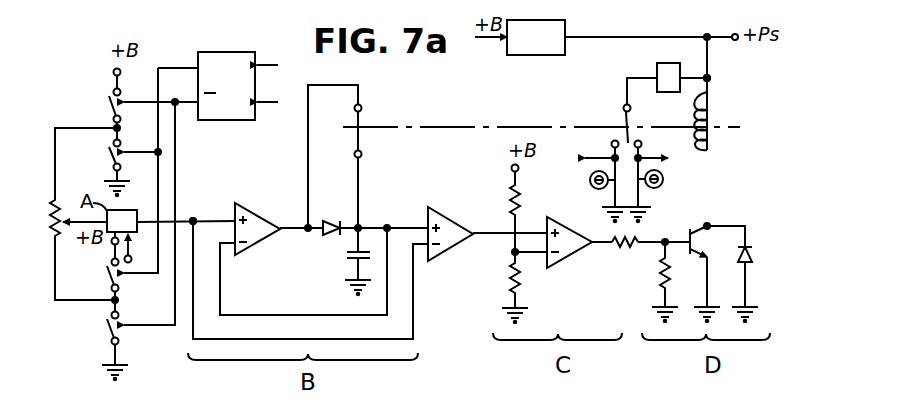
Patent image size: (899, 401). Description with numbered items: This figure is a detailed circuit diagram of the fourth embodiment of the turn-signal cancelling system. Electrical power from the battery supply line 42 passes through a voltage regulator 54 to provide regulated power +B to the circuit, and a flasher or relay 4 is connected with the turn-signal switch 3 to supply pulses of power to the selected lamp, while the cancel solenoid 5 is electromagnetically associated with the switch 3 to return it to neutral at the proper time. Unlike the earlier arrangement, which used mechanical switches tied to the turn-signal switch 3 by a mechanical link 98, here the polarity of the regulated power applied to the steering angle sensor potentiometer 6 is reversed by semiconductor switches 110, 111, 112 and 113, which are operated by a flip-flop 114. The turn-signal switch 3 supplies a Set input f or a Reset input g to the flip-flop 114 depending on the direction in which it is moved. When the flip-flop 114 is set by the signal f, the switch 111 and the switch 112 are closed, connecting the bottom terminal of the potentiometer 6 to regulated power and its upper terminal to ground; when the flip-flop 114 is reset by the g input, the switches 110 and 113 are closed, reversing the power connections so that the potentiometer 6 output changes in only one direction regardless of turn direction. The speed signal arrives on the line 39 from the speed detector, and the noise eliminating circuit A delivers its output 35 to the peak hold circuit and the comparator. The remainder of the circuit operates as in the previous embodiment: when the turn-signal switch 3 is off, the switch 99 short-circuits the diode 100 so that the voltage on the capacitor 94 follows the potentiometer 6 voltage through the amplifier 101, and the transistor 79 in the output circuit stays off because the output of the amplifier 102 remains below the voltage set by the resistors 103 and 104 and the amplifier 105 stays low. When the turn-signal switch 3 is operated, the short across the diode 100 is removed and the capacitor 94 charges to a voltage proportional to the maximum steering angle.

The turn-signal switch 3 is at (622, 119).
The flasher or relay 4 is at (658, 64).
The cancel solenoid 5 is at (718, 142).
The steering angle sensor potentiometer 6 is at (42, 229).
The output of the noise eliminating circuit 35 is at (193, 219).
The speed signal line 39 is at (132, 252).
The power supply line 42 is at (712, 66).
The voltage regulator 54 is at (541, 55).
The transistor 79 is at (689, 249).
The capacitor 94 is at (350, 262).
The mechanical link 98 is at (443, 127).
The switch 99 is at (362, 113).
The diode 100 is at (333, 220).
The amplifier 101 is at (252, 207).
The amplifier 102 is at (446, 204).
The resistor 103 is at (512, 195).
The resistor 104 is at (511, 275).
The amplifier 105 is at (573, 252).
The semiconductor switch 110 is at (109, 102).
The semiconductor switch 111 is at (109, 154).
The semiconductor switch 112 is at (108, 273).
The semiconductor switch 113 is at (108, 330).
The flip-flop 114 is at (212, 52).